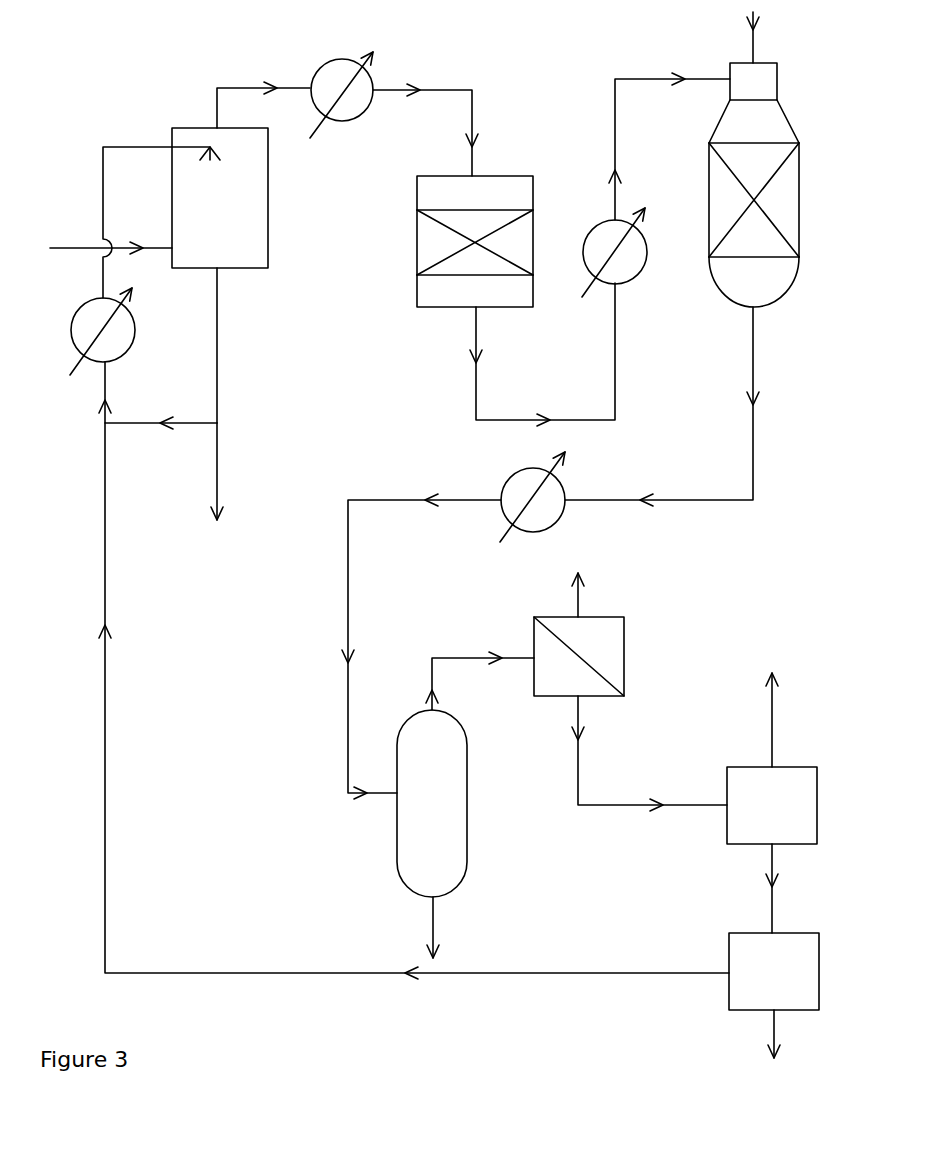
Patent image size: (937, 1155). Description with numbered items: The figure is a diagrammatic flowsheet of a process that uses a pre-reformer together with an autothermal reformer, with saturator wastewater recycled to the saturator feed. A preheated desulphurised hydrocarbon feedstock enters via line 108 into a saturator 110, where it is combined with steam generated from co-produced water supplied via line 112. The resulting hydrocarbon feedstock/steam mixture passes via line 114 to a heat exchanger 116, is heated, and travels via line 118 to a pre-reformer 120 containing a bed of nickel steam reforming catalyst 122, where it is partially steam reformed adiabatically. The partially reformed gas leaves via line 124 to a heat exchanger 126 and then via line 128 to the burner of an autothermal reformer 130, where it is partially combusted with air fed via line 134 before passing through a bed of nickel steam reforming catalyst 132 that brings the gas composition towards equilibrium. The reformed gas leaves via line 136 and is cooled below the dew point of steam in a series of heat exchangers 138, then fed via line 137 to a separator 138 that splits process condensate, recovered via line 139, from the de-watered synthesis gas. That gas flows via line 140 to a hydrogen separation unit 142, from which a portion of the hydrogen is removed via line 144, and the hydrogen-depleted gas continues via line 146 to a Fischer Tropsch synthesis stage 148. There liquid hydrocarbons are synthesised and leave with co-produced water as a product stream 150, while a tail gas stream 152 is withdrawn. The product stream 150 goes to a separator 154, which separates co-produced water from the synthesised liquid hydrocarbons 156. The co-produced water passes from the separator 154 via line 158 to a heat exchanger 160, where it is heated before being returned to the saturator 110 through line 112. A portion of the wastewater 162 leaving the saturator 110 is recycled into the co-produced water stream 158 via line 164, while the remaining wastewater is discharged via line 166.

The line 108 is at (88, 248).
The saturator 110 is at (268, 202).
The line 112 is at (155, 147).
The line 114 is at (243, 88).
The heat exchanger 116 is at (375, 80).
The line 118 is at (460, 87).
The pre-reformer 120 is at (450, 175).
The nickel steam reforming catalyst 122 is at (427, 233).
The line 124 is at (475, 393).
The heat exchanger 126 is at (612, 222).
The line 128 is at (655, 78).
The autothermal reformer 130 is at (793, 128).
The nickel steam reforming catalyst 132 is at (790, 217).
The line 134 is at (755, 48).
The line 136 is at (757, 400).
The line 137 is at (348, 603).
The heat exchangers and separator 138 is at (520, 467).
The line 139 is at (433, 917).
The line 140 is at (475, 658).
The hydrogen separation unit 142 is at (608, 697).
The line 144 is at (575, 600).
The line 146 is at (578, 757).
The Fischer Tropsch synthesis stage 148 is at (818, 800).
The product stream 150 is at (773, 862).
The tail gas stream 152 is at (773, 753).
The separator 154 is at (819, 948).
The synthesised liquid hydrocarbons 156 is at (773, 1032).
The line 158 is at (463, 975).
The heat exchanger 160 is at (72, 313).
The wastewater 162 is at (219, 340).
The line 164 is at (180, 423).
The line 166 is at (222, 455).